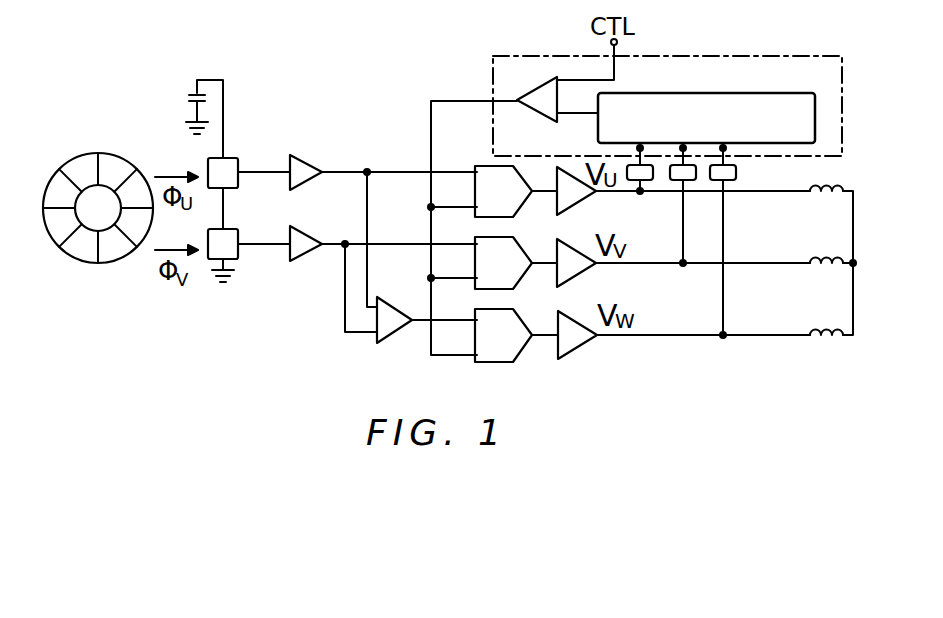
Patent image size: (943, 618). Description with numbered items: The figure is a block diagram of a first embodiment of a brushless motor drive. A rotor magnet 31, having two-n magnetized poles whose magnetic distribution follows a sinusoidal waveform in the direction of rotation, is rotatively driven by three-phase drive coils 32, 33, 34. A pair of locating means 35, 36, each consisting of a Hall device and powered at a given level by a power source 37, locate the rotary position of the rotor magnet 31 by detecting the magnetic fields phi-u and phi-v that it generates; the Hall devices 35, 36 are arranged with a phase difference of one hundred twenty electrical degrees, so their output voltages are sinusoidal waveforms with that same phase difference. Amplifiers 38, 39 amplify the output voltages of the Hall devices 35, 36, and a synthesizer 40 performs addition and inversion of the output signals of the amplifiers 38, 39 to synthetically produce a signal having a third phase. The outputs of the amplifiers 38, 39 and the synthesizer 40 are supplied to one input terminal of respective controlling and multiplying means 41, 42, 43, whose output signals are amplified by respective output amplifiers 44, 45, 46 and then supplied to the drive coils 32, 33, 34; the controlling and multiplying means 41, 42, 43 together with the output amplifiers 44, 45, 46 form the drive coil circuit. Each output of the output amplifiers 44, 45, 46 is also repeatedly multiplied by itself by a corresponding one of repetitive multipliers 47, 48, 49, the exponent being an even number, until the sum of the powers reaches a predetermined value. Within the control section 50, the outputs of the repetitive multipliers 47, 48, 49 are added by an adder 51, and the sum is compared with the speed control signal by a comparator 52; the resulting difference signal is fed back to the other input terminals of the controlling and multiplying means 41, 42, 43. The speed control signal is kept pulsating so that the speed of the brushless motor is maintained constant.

The rotor magnet 31 is at (98, 263).
The drive coil 32 is at (826, 197).
The drive coil 33 is at (828, 269).
The drive coil 34 is at (826, 341).
The locating means 35 is at (238, 163).
The locating means 36 is at (238, 237).
The power source 37 is at (189, 97).
The amplifier 38 is at (316, 170).
The amplifier 39 is at (318, 240).
The synthesizer 40 is at (404, 340).
The controlling and multiplying means 41 is at (528, 198).
The controlling and multiplying means 42 is at (530, 270).
The controlling and multiplying means 43 is at (530, 347).
The output amplifier 44 is at (598, 198).
The output amplifier 45 is at (588, 273).
The output amplifier 46 is at (592, 340).
The repetitive multiplier 47 is at (655, 178).
The repetitive multiplier 48 is at (698, 178).
The repetitive multiplier 49 is at (738, 178).
The control section 50 is at (752, 56).
The adder 51 is at (662, 93).
The comparator 52 is at (528, 108).